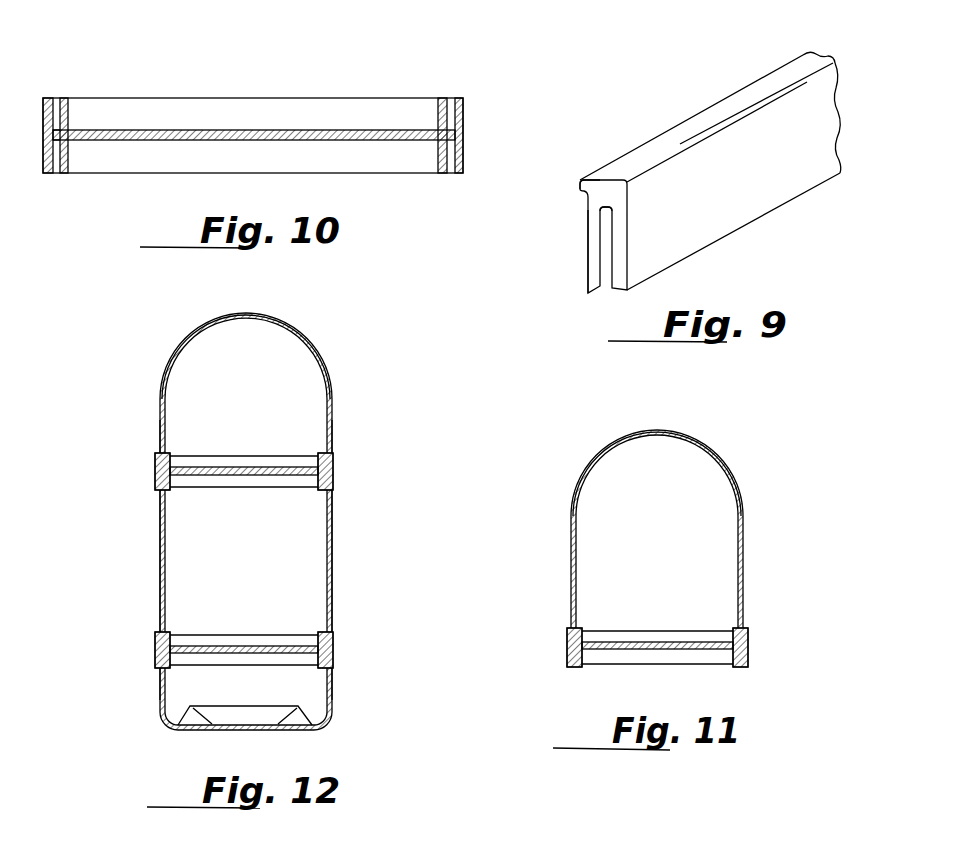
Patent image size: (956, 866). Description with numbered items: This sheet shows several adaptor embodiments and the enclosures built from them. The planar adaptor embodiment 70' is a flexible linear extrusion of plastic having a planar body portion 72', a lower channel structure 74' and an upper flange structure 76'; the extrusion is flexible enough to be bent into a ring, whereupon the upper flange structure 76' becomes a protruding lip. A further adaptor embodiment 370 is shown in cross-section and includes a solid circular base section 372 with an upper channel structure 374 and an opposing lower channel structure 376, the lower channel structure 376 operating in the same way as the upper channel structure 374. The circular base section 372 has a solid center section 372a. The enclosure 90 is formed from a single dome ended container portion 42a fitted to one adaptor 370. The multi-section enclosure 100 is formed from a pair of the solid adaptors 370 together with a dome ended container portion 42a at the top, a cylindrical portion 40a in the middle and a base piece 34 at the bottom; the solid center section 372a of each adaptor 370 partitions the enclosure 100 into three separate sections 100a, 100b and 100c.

In FIG. 10, the adaptor embodiment 370 is at (472, 129).
In FIG. 9, the adaptor embodiment 370 is at (475, 127).
In FIG. 12, the adaptor embodiment 370 is at (155, 468).
In FIG. 11, the adaptor embodiment 370 is at (567, 643).
In FIG. 10, the solid circular base section 372 is at (68, 130).
In FIG. 10, the solid center section 372a is at (253, 130).
In FIG. 10, the upper channel structure 374 is at (41, 100).
In FIG. 10, the lower channel structure 376 is at (41, 139).
In FIG. 9, the planar adaptor embodiment 70' is at (710, 159).
In FIG. 9, the planar body portion 72' is at (648, 196).
In FIG. 9, the lower channel structure 74' is at (563, 251).
In FIG. 9, the upper flange structure 76' is at (554, 193).
In FIG. 12, the multi-section enclosure 100 is at (340, 527).
In FIG. 12, the first section 100a is at (272, 399).
In FIG. 12, the second section 100b is at (266, 567).
In FIG. 12, the third section 100c is at (262, 697).
In FIG. 12, the cylindrical portion 40a is at (160, 548).
In FIG. 12, the dome ended container portion 42a is at (180, 350).
In FIG. 11, the dome ended container portion 42a is at (588, 470).
In FIG. 12, the base piece 34 is at (162, 710).
In FIG. 11, the enclosure 90 is at (755, 549).